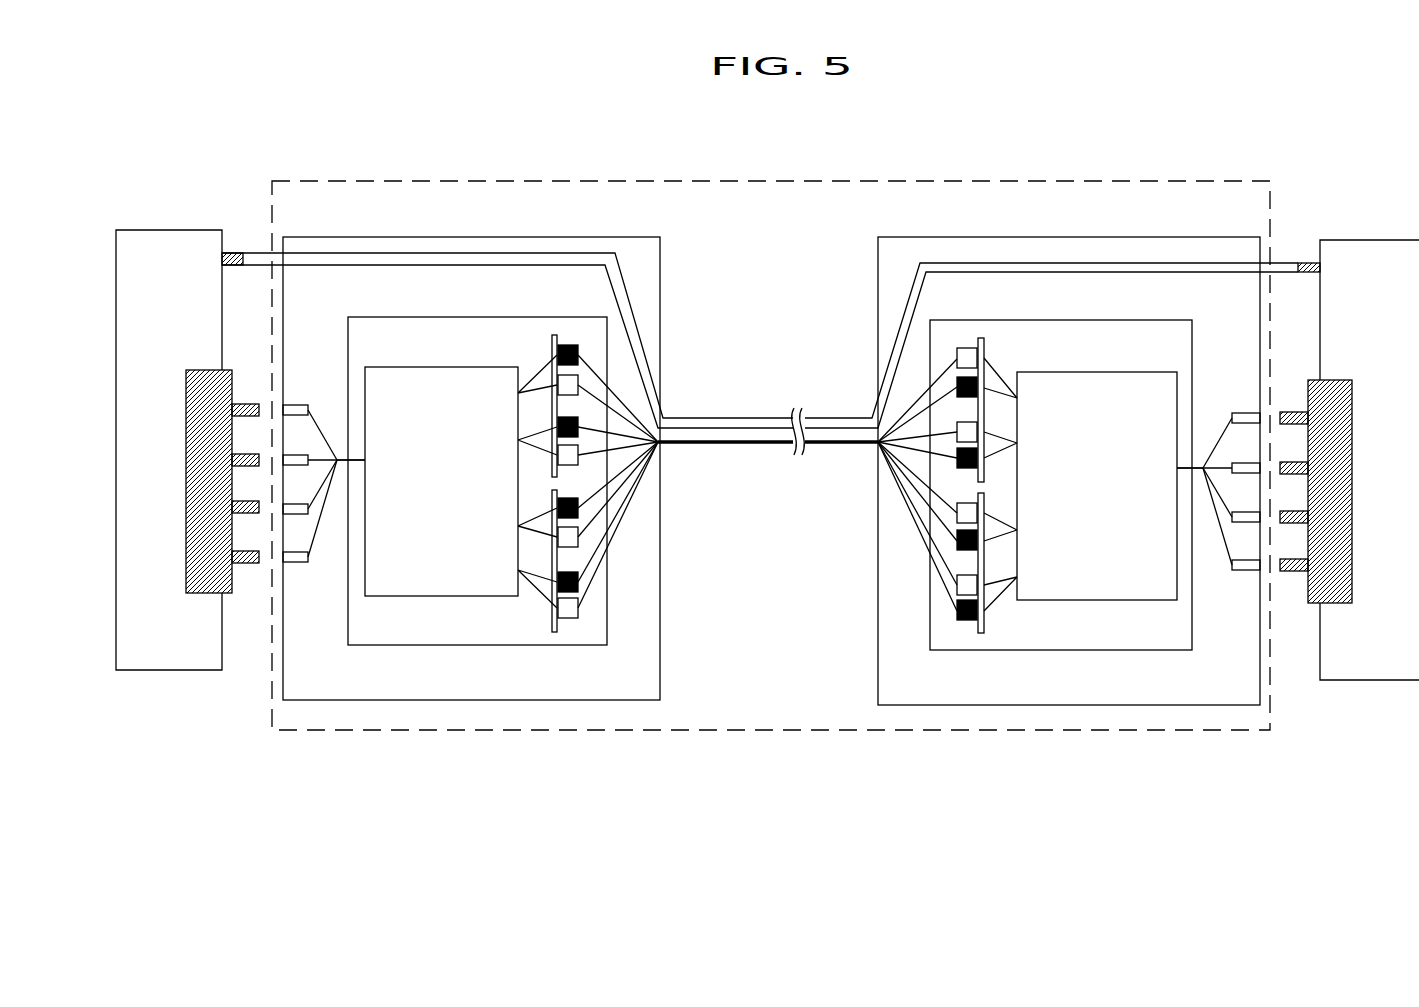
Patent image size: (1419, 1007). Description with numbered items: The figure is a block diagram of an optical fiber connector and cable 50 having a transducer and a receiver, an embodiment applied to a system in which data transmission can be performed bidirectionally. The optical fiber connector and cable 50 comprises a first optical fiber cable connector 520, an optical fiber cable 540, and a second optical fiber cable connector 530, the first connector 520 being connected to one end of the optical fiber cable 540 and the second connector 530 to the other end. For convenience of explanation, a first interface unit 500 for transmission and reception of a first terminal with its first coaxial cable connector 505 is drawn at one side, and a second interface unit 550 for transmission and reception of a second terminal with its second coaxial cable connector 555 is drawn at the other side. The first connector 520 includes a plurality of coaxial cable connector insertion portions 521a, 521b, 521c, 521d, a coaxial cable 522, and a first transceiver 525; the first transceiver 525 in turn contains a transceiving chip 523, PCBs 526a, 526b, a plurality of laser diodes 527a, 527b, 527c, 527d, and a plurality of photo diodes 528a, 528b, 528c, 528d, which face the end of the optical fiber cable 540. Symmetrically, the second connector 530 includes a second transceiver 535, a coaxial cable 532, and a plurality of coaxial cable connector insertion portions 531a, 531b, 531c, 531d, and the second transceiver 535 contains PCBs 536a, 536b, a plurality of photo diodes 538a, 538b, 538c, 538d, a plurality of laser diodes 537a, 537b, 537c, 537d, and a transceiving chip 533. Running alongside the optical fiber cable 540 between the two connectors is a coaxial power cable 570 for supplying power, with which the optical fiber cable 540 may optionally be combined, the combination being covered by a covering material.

The optical fiber connector and cable 50 is at (935, 181).
The first interface unit 500 is at (160, 230).
The first coaxial cable connector 505 is at (203, 596).
The first optical fiber cable connector 520 is at (530, 224).
The coaxial cable connector insertion portion 521a is at (288, 405).
The coaxial cable connector insertion portion 521b is at (295, 455).
The coaxial cable connector insertion portion 521c is at (290, 514).
The coaxial cable connector insertion portion 521d is at (290, 563).
The coaxial cable 522 is at (365, 462).
The transceiving chip 523 is at (450, 596).
The first transceiver 525 is at (400, 316).
The PCB 526a is at (552, 340).
The PCB 526b is at (552, 630).
The laser diode 527a is at (578, 355).
The laser diode 527b is at (578, 427).
The laser diode 527c is at (578, 508).
The laser diode 527d is at (578, 582).
The photo diode 528a is at (578, 385).
The photo diode 528b is at (578, 455).
The photo diode 528c is at (578, 537).
The photo diode 528d is at (578, 608).
The second optical fiber cable connector 530 is at (1025, 237).
The coaxial cable connector insertion portion 531a is at (1252, 412).
The coaxial cable connector insertion portion 531b is at (1240, 463).
The coaxial cable connector insertion portion 531c is at (1245, 520).
The coaxial cable connector insertion portion 531d is at (1250, 568).
The coaxial cable 532 is at (1180, 472).
The transceiving chip 533 is at (1087, 600).
The second transceiver 535 is at (1035, 320).
The PCB 536a is at (982, 338).
The PCB 536b is at (981, 633).
The laser diode 537a is at (957, 387).
The laser diode 537b is at (957, 458).
The laser diode 537c is at (957, 541).
The laser diode 537d is at (957, 611).
The photo diode 538a is at (957, 359).
The photo diode 538b is at (957, 432).
The photo diode 538c is at (957, 513).
The photo diode 538d is at (957, 585).
The optical fiber cable 540 is at (768, 445).
The second interface unit 550 is at (1369, 240).
The second coaxial cable connector 555 is at (1330, 605).
The coaxial power cable 570 is at (771, 417).